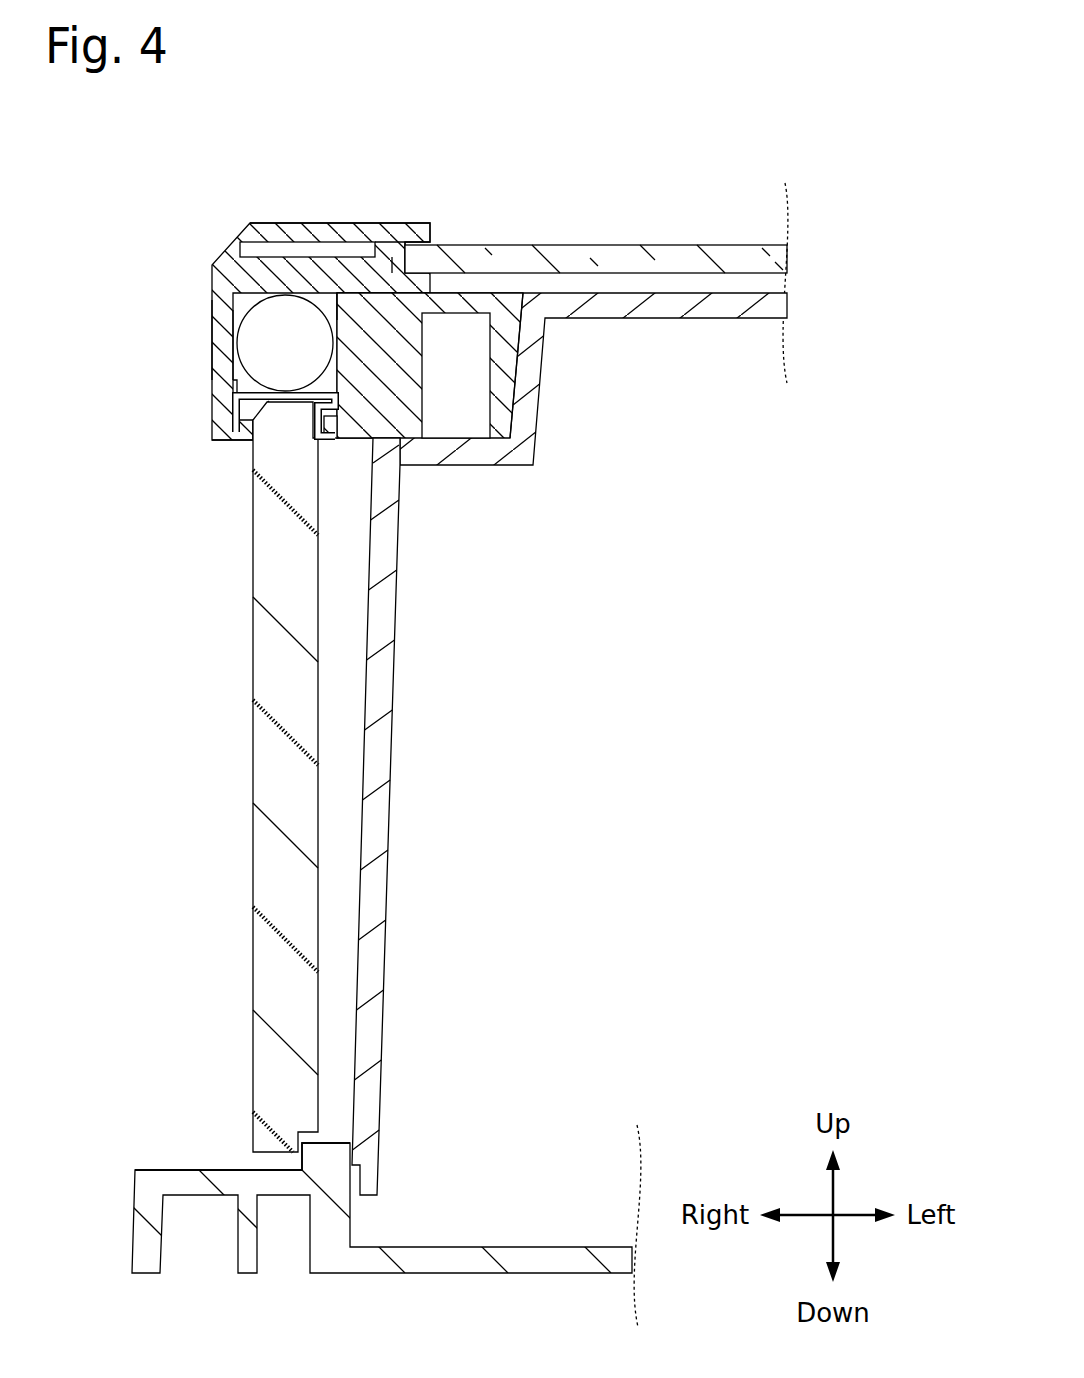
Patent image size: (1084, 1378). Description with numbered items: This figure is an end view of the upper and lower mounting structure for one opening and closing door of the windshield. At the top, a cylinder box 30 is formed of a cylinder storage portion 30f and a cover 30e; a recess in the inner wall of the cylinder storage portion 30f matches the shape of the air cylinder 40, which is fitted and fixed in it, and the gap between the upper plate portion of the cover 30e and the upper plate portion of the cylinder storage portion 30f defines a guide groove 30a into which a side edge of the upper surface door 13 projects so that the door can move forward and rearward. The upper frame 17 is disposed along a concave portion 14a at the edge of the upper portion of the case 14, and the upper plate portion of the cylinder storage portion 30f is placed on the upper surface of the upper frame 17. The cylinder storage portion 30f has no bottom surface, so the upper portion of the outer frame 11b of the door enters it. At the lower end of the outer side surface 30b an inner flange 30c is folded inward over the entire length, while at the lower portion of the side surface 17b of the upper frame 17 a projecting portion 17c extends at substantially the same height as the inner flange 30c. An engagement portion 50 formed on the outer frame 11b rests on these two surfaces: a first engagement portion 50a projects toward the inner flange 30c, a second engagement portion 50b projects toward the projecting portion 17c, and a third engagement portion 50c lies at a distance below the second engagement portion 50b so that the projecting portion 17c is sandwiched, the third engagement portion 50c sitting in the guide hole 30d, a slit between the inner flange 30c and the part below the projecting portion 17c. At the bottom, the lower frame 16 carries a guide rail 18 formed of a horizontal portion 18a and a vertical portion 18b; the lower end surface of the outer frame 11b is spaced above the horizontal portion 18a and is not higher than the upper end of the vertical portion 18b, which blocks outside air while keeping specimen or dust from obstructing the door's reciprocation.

The cylinder box 30 is at (193, 298).
The cover 30e is at (257, 225).
The guide groove 30a is at (433, 258).
The outer side surface 30b is at (212, 322).
The cylinder storage portion 30f is at (223, 368).
The inner flange 30c is at (225, 433).
The guide hole 30d is at (270, 425).
The air cylinder 40 is at (247, 363).
The upper surface door 13 is at (520, 258).
The upper frame 17 is at (500, 353).
The side surface 17b is at (305, 300).
The projecting portion 17c is at (340, 440).
The concave portion 14a is at (480, 415).
The case 14 is at (385, 730).
The outer frame 11b is at (267, 787).
The engagement portion 50 is at (235, 455).
The first engagement portion 50a is at (237, 407).
The second engagement portion 50b is at (300, 397).
The third engagement portion 50c is at (322, 443).
The lower frame 16 is at (150, 1205).
The guide rail 18 is at (148, 1100).
The horizontal portion 18a is at (180, 1170).
The vertical portion 18b is at (300, 1165).